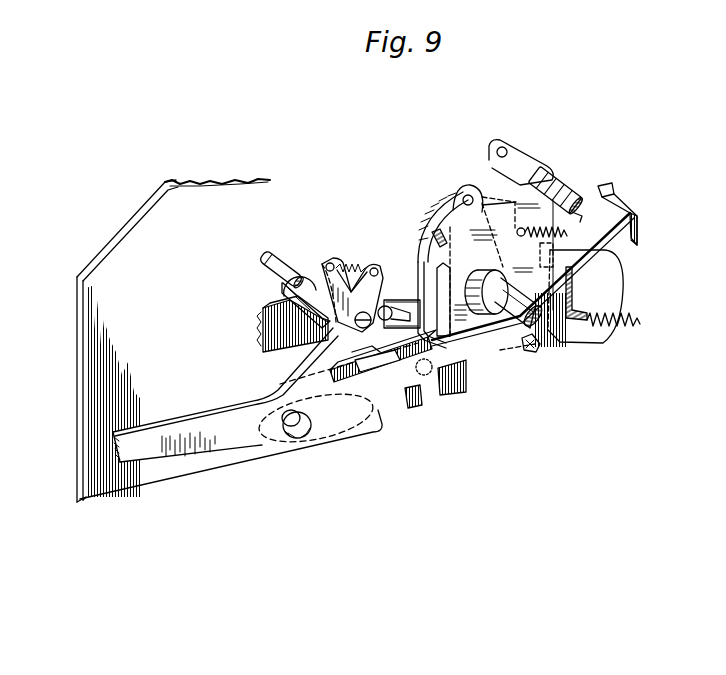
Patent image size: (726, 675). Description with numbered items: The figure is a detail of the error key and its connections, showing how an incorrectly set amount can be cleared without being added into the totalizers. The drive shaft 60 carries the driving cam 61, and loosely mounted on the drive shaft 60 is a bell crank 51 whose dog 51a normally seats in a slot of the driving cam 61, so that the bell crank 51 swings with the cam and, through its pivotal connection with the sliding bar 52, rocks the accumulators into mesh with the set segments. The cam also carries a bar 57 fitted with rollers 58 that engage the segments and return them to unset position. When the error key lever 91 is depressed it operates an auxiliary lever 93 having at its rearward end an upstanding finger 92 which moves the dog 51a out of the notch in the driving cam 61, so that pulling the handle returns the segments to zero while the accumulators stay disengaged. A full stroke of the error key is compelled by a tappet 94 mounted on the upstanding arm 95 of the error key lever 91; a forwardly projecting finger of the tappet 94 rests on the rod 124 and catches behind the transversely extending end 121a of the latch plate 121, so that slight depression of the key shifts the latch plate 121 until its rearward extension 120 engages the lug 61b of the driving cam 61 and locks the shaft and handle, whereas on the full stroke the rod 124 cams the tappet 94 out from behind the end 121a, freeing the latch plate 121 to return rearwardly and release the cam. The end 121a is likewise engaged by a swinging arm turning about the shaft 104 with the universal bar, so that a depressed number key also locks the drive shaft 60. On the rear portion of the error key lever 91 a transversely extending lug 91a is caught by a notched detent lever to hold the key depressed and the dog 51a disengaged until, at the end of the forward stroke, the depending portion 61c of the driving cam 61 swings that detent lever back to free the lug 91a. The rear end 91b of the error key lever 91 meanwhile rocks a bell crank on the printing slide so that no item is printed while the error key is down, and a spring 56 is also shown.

The bell crank 51 is at (470, 186).
The dog 51a is at (452, 208).
The sliding bar 52 is at (268, 346).
The spring 56 is at (523, 237).
The bar 57 is at (586, 220).
The rollers 58 is at (556, 196).
The drive shaft 60 is at (536, 345).
The driving cam 61 is at (505, 290).
The lug 61b is at (602, 292).
The depending portion 61c is at (461, 398).
The error key lever 91 is at (203, 420).
The transversely extending lug 91a is at (526, 350).
The rear end 91b is at (636, 212).
The upstanding finger 92 is at (414, 268).
The auxiliary lever 93 is at (386, 396).
The tappet 94 is at (331, 263).
The upstanding arm 95 is at (378, 369).
The shaft 104 is at (296, 442).
The rearward extension 120 is at (617, 257).
The latch plate 121 is at (400, 303).
The transversely extending end 121a is at (298, 298).
The rod 124 is at (262, 262).